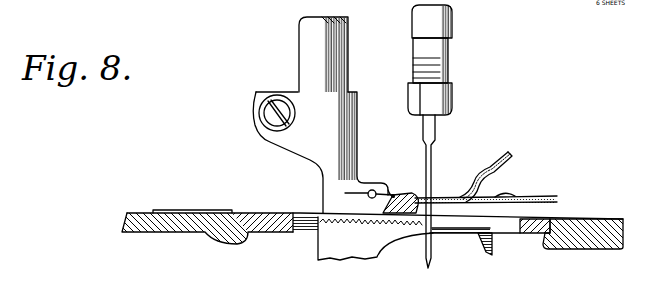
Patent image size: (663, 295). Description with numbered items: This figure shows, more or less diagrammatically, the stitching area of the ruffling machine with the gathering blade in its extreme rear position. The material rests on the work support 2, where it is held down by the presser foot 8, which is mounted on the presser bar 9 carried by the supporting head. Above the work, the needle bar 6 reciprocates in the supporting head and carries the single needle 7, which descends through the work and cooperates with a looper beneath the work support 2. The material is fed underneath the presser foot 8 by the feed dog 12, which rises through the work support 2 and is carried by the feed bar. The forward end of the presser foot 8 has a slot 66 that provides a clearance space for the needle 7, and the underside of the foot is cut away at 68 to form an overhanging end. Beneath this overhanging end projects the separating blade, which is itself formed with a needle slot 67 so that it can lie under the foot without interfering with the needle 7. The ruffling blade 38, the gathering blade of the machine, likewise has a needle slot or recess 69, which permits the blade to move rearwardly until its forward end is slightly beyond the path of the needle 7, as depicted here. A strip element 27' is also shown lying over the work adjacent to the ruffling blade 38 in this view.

The work support 2 is at (592, 225).
The needle bar 6 is at (452, 23).
The needle 7 is at (433, 162).
The presser foot 8 is at (345, 193).
The presser bar 9 is at (348, 58).
The feed dog 12 is at (368, 248).
The trimming strip 27' is at (538, 180).
The ruffling blade 38 is at (509, 152).
The slot 66 is at (421, 197).
The needle slot 67 is at (433, 222).
The cut-away portion 68 is at (394, 196).
The needle slot or recess 69 is at (450, 197).